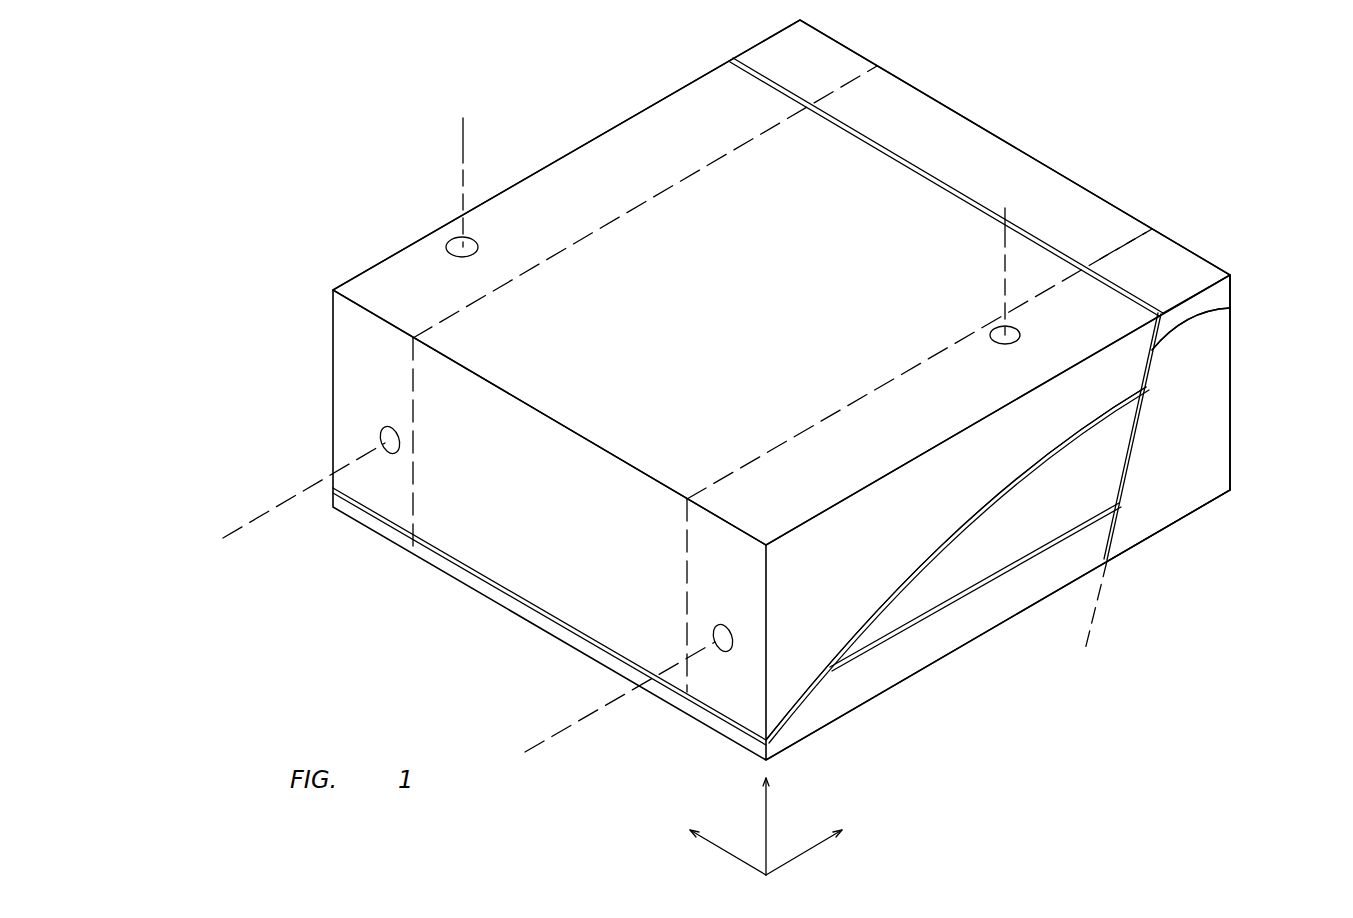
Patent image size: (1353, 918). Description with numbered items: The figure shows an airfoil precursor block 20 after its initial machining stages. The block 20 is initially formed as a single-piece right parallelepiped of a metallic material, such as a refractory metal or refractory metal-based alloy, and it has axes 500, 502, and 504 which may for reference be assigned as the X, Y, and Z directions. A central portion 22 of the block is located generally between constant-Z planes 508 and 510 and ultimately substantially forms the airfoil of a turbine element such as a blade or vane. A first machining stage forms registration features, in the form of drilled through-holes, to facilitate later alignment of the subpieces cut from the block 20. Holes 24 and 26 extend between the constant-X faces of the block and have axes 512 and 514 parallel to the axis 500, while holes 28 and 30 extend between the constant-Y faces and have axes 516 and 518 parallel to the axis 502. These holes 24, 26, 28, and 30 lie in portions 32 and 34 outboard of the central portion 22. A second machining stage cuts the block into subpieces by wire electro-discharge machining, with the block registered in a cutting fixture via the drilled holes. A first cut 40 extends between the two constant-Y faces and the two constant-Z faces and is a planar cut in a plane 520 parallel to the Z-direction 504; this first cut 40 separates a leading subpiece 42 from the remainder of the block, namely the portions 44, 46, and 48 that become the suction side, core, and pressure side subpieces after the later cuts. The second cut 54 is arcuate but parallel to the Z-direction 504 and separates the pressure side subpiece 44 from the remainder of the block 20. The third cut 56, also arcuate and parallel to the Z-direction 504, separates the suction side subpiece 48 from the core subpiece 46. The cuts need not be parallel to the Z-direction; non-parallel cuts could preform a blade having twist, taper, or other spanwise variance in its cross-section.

The airfoil precursor block 20 is at (1262, 428).
The central portion 22 is at (1033, 137).
The hole 24 is at (726, 653).
The hole 26 is at (392, 457).
The hole 28 is at (997, 332).
The hole 30 is at (473, 240).
The portion 32 is at (1215, 240).
The portion 34 is at (870, 43).
The first cut 40 is at (1128, 450).
The leading subpiece 42 is at (1208, 378).
The pressure side subpiece 44 is at (1135, 357).
The core subpiece 46 is at (1117, 422).
The suction side subpiece 48 is at (1010, 593).
The second cut 54 is at (968, 513).
The third cut 56 is at (907, 622).
The axis 500 is at (802, 858).
The axis 502 is at (767, 807).
The axis 504 is at (720, 850).
The constant-Z plane 508 is at (1140, 230).
The constant-Z plane 510 is at (848, 87).
The axis 512 is at (550, 745).
The axis 514 is at (240, 530).
The axis 516 is at (1005, 237).
The axis 518 is at (460, 162).
The plane 520 is at (1085, 634).